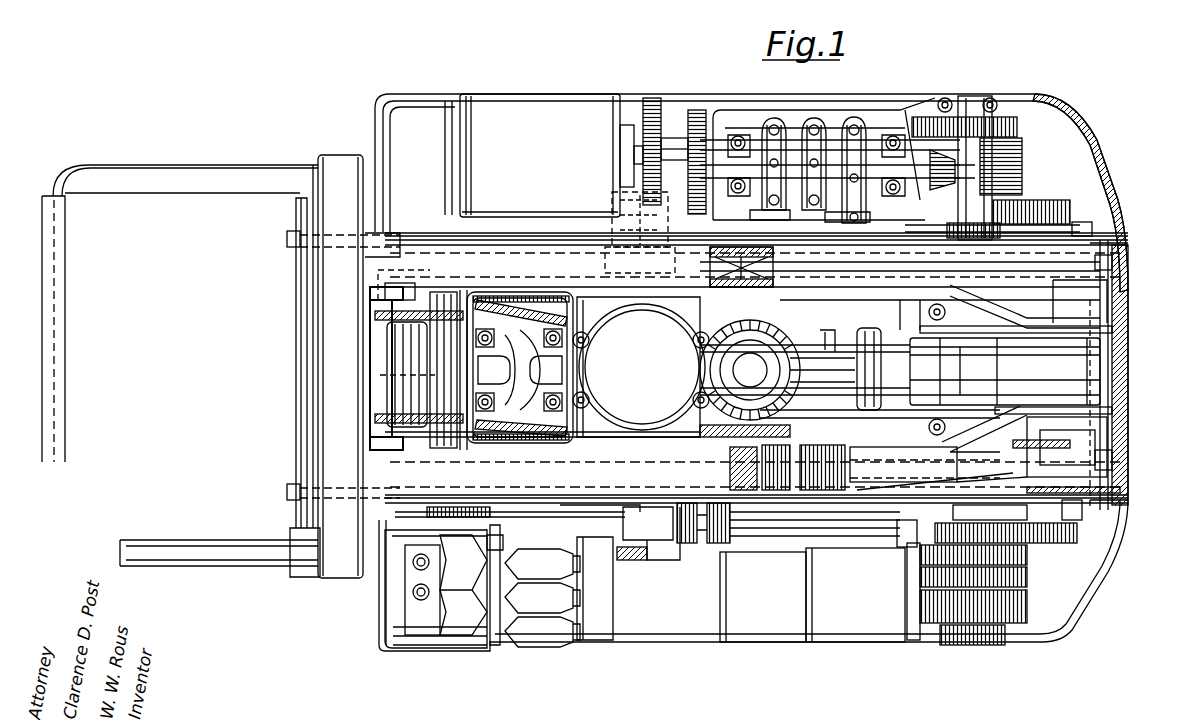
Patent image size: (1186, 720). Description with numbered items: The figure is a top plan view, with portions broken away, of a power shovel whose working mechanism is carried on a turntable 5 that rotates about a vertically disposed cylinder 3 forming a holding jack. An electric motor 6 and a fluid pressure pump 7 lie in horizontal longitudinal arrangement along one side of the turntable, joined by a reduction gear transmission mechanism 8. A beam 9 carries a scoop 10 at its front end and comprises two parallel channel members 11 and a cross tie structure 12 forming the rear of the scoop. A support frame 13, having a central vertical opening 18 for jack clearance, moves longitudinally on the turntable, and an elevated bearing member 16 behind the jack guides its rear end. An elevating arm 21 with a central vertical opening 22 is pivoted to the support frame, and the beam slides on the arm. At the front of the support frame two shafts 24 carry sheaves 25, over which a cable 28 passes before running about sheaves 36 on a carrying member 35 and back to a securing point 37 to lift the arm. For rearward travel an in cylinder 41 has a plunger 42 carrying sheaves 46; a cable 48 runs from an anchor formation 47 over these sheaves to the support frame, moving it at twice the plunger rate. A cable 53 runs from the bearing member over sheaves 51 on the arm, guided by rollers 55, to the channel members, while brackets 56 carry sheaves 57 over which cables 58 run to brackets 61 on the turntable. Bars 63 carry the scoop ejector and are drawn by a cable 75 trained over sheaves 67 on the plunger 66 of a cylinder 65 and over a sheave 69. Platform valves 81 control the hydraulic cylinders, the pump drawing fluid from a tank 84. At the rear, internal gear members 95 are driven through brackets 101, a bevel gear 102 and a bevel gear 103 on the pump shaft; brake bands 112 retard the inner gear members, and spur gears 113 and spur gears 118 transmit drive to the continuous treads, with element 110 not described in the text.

The vertically disposed cylinder 3 is at (642, 367).
The turntable 5 is at (1033, 641).
The electric motor 6 is at (548, 94).
The fluid pressure pump 7 is at (826, 112).
The reduction gear transmission mechanism 8 is at (696, 110).
The beam 9 is at (1110, 468).
The scoop 10 is at (248, 566).
The channel members 11 is at (1100, 488).
The cross tie structure 12 is at (300, 348).
The support frame 13 is at (392, 402).
The bearing member 16 is at (780, 335).
The central vertical opening 18 is at (656, 452).
The elevating arm 21 is at (372, 443).
The central vertical opening 22 is at (680, 282).
The transversely disposed shafts 24 is at (380, 296).
The sheaves 25 is at (397, 372).
The cable 28 is at (452, 317).
The carrying member 35 is at (556, 437).
The sheaves 36 is at (510, 430).
The cable securing point 37 is at (537, 422).
The in cylinder 41 is at (826, 346).
The plunger 42 is at (1035, 366).
The sheaves 46 is at (1115, 410).
The anchor formation 47 is at (868, 370).
The cable 48 is at (963, 447).
The sheaves 51 is at (752, 247).
The cable 53 is at (1130, 372).
The rollers 55 is at (1112, 458).
The brackets 56 is at (1012, 506).
The sheaves 57 is at (1125, 498).
The cables 58 is at (1075, 522).
The brackets 61 is at (647, 557).
The bars 63 is at (528, 243).
The cylinder 65 is at (778, 548).
The plunger 66 is at (673, 557).
The sheaves 67 is at (622, 512).
The sheave 69 is at (415, 532).
The cable 75 is at (542, 512).
The platform valves 81 is at (527, 630).
The tank 84 is at (852, 632).
The internal gear members 95 is at (1027, 600).
The brackets 101 is at (1000, 127).
The bevel gear 102 is at (1023, 188).
The bevel gear 103 is at (928, 134).
The block 110 is at (985, 513).
The brake bands 112 is at (1030, 576).
The spur gear 113 is at (917, 553).
The spur gears 118 is at (1030, 543).